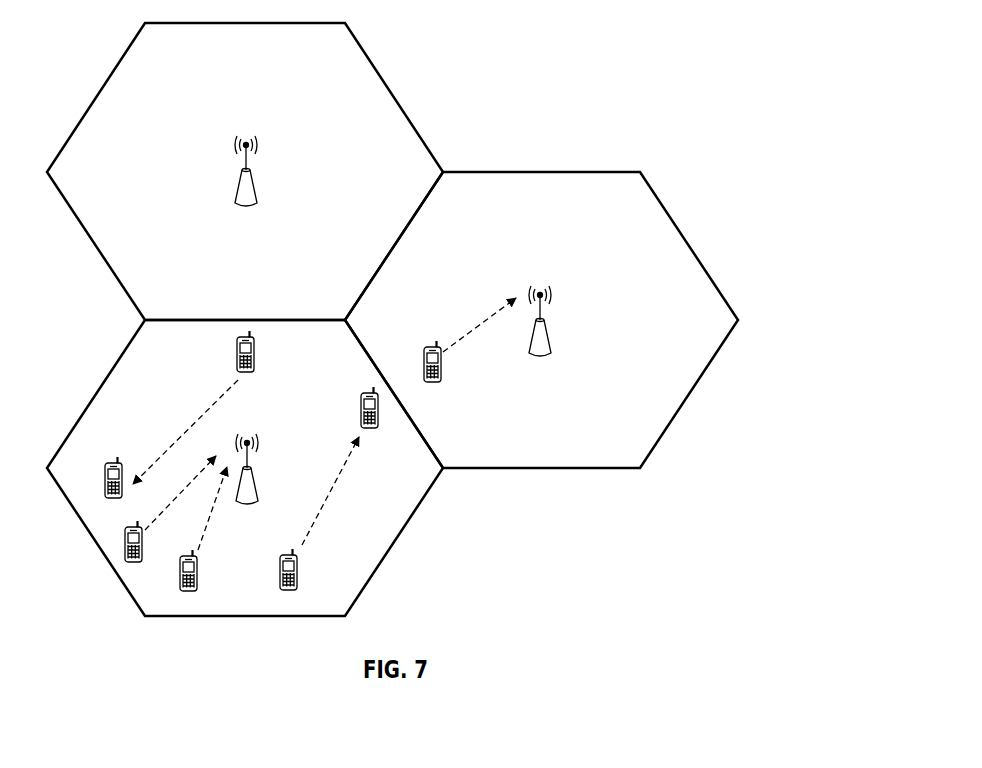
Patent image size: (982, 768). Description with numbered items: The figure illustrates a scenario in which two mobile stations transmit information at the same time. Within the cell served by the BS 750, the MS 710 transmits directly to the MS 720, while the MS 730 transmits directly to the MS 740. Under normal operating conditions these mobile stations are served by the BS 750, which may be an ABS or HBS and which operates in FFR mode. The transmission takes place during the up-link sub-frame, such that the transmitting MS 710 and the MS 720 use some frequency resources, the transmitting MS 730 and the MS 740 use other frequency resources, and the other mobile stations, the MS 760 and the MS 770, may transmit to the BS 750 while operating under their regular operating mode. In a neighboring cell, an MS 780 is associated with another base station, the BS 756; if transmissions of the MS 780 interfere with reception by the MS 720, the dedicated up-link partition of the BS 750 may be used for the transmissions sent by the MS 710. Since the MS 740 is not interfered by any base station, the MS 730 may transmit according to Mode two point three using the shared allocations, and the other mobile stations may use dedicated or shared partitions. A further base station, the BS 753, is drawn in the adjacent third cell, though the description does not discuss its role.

The MS 710 is at (302, 572).
The MS 720 is at (363, 392).
The MS 730 is at (234, 350).
The MS 740 is at (116, 461).
The BS 750 is at (253, 436).
The base station 753 is at (240, 136).
The BS 756 is at (536, 284).
The MS 760 is at (123, 542).
The MS 770 is at (178, 578).
The MS 780 is at (430, 344).